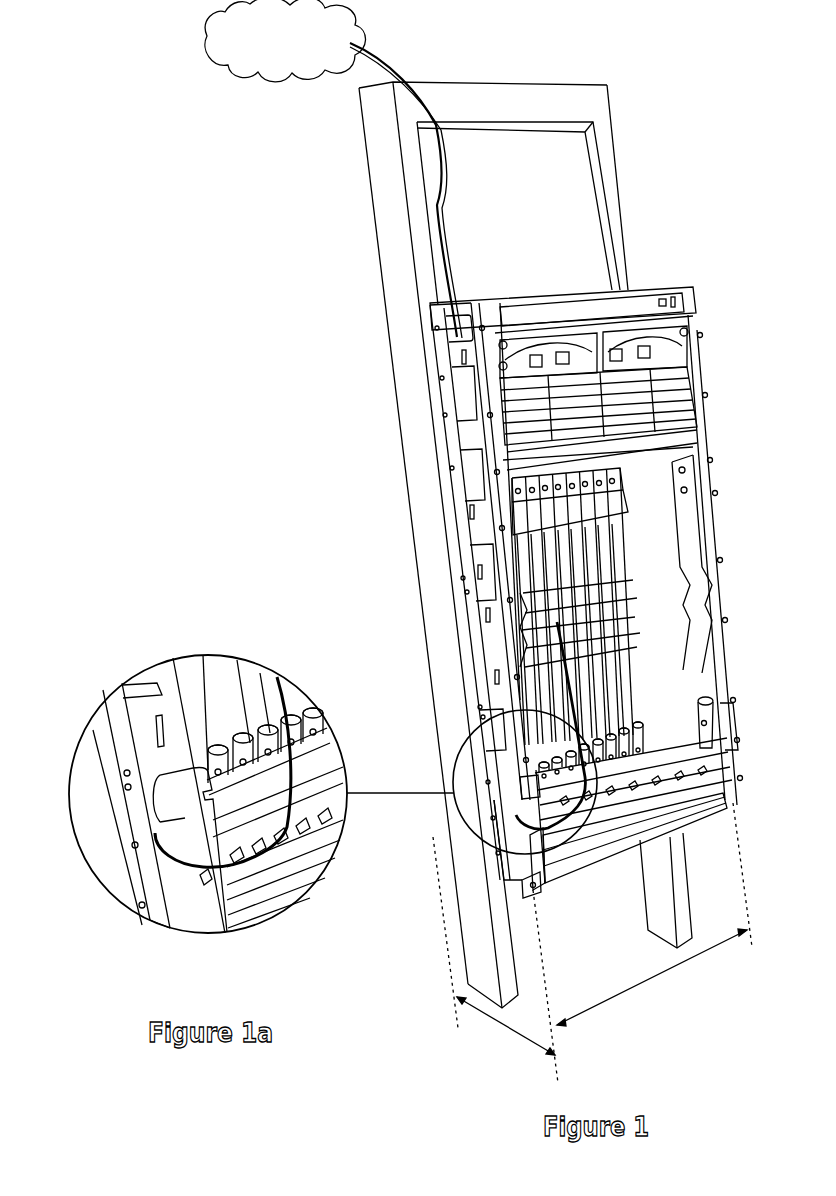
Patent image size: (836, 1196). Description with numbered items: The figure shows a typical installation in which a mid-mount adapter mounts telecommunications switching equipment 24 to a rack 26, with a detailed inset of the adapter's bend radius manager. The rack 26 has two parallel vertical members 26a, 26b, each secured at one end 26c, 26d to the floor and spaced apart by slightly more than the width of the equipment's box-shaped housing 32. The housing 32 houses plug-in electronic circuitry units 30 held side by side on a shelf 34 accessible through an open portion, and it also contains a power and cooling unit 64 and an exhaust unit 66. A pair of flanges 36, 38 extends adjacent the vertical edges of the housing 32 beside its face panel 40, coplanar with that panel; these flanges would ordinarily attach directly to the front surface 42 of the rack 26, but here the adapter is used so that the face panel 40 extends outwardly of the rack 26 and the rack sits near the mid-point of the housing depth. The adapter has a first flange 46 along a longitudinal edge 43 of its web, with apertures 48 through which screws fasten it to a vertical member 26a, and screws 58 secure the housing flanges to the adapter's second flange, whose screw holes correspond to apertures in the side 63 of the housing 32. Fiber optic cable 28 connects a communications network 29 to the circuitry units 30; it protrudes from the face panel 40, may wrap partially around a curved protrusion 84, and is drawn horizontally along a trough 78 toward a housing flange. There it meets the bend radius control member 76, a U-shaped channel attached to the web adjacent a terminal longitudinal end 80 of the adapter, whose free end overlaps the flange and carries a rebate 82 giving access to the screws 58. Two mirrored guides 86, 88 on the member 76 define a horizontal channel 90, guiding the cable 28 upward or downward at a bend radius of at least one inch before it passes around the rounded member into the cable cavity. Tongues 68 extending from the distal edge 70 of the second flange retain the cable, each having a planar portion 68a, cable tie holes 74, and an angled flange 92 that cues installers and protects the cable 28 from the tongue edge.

In FIG. 1, the telecommunications switching equipment 24 is at (657, 265).
In FIG. 1, the rack 26 is at (462, 70).
In FIG. 1, the vertical member 26a is at (383, 213).
In FIG. 1, the vertical member 26b is at (585, 172).
In FIG. 1, the end of vertical member 26c is at (466, 912).
In FIG. 1, the end of vertical member 26d is at (655, 905).
In FIG. 1, the fiber optic cable 28 is at (582, 870).
In FIG. 1A, the fiber optic cable 28 is at (265, 905).
In FIG. 1, the communications network 29 is at (207, 36).
In FIG. 1, the plug-in electronic circuitry units 30 is at (613, 700).
In FIG. 1A, the plug-in electronic circuitry units 30 is at (220, 672).
In FIG. 1, the housing 32 is at (402, 510).
In FIG. 1, the shelf 34 is at (703, 718).
In FIG. 1, the flange 36 is at (476, 304).
In FIG. 1, the flange 38 is at (690, 330).
In FIG. 1, the face panel 40 is at (540, 303).
In FIG. 1, the front surface 42 is at (553, 95).
In FIG. 1, the longitudinal edge 43 is at (455, 575).
In FIG. 1, the first flange 46 is at (470, 745).
In FIG. 1A, the apertures 48 is at (132, 845).
In FIG. 1, the screws 58 is at (432, 388).
In FIG. 1, the side of housing 63 is at (420, 643).
In FIG. 1, the power and cooling unit 64 is at (637, 380).
In FIG. 1, the exhaust unit 66 is at (617, 835).
In FIG. 1, the tongue 68 is at (437, 347).
In FIG. 1A, the tongue 68 is at (130, 705).
In FIG. 1A, the planar portion 68a is at (130, 710).
In FIG. 1, the distal edge 70 is at (455, 300).
In FIG. 1, the cable tie holes 74 is at (490, 617).
In FIG. 1A, the cable tie holes 74 is at (160, 740).
In FIG. 1, the bend radius control member 76 is at (520, 875).
In FIG. 1A, the bend radius control member 76 is at (178, 918).
In FIG. 1, the horizontal trough 78 is at (733, 735).
In FIG. 1, the terminal longitudinal end 80 is at (505, 846).
In FIG. 1, the rebate 82 is at (537, 892).
In FIG. 1, the protrusion 84 is at (735, 775).
In FIG. 1A, the first guide 86 is at (190, 853).
In FIG. 1A, the second guide 88 is at (205, 905).
In FIG. 1A, the horizontal channel 90 is at (142, 890).
In FIG. 1A, the angled flange 92 is at (133, 753).